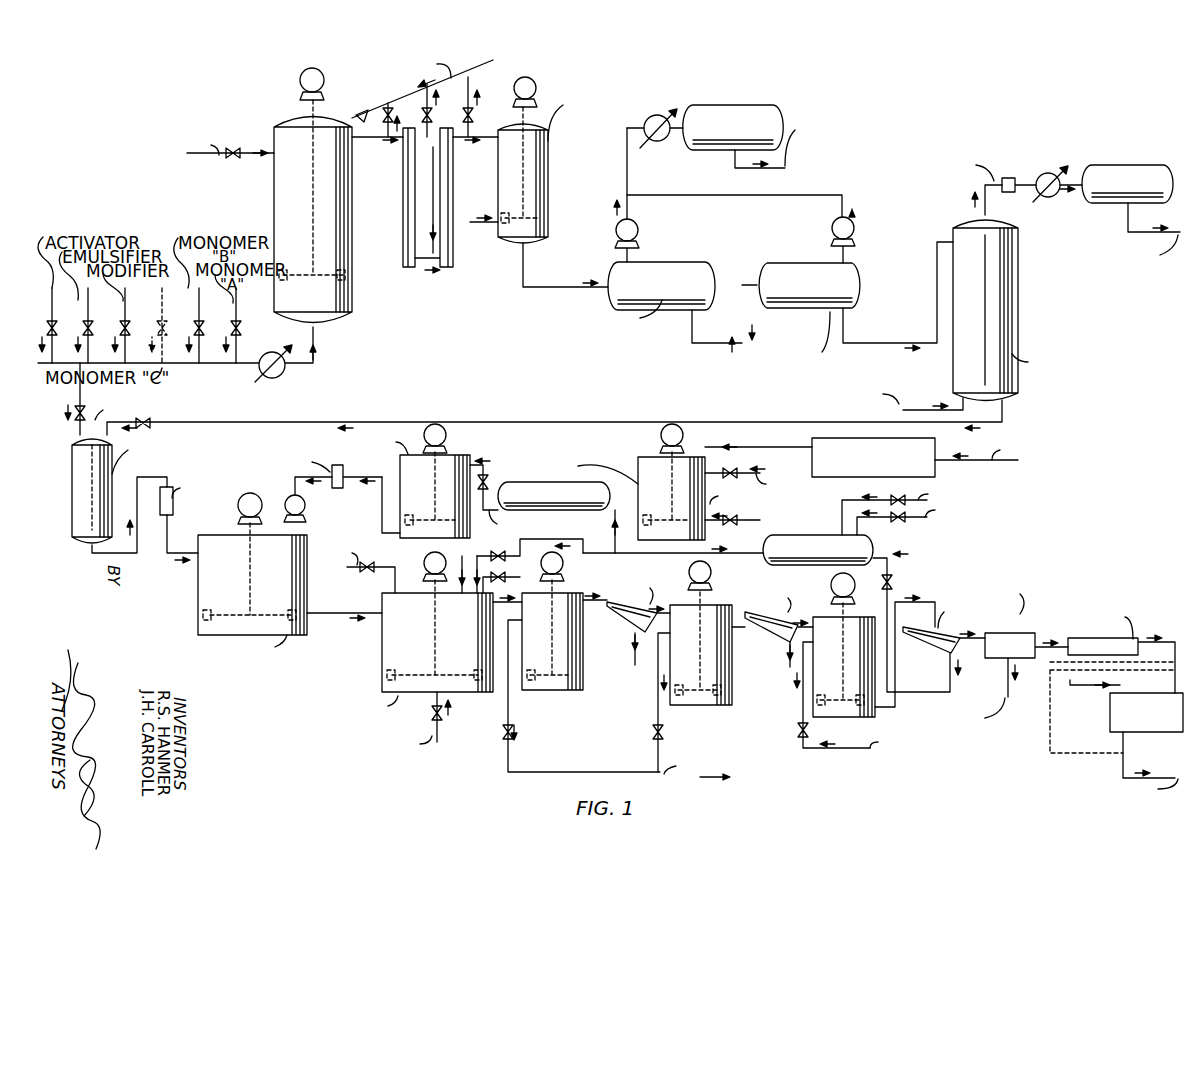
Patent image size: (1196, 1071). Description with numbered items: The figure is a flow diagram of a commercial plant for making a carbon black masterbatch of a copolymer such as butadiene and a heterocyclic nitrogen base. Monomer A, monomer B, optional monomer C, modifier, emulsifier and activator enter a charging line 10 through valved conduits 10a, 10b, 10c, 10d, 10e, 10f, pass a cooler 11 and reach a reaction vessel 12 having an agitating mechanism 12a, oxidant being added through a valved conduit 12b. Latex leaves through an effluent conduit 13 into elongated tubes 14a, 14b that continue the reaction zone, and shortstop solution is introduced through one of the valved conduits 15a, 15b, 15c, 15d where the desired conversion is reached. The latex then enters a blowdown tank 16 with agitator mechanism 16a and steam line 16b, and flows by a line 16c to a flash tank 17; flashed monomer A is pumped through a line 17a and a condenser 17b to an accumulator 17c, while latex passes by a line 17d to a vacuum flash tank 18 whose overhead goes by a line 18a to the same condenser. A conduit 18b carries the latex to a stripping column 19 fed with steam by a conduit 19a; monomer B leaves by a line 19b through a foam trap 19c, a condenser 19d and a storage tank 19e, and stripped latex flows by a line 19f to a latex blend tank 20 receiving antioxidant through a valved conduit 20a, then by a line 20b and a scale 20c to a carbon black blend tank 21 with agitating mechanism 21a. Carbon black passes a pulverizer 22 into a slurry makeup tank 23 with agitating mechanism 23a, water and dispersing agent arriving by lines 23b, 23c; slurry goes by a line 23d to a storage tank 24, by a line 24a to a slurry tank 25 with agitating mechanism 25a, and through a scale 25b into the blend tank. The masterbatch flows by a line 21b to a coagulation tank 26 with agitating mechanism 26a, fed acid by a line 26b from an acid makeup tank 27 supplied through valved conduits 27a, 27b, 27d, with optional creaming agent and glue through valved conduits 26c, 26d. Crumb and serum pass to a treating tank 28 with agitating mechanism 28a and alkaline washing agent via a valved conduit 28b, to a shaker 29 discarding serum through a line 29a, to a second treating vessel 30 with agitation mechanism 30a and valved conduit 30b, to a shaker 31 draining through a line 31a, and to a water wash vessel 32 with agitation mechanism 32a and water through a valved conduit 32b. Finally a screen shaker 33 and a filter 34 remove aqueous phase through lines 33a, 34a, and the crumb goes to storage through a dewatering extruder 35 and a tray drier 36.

The charging line 10 is at (216, 364).
The valved conduit 10a is at (249, 315).
The valved conduit 10b is at (212, 315).
The valved conduit 10c is at (174, 315).
The valved conduit 10d is at (138, 315).
The valved conduit 10e is at (100, 315).
The valved conduit 10f is at (63, 315).
The cooler 11 is at (272, 350).
The reaction vessel 12 is at (344, 232).
The agitating mechanism 12a is at (300, 74).
The valved conduit 12b is at (201, 155).
The effluent conduit 13 is at (354, 138).
The elongated tube 14a is at (402, 190).
The elongated tube 14b is at (446, 172).
The valved conduit 15a is at (362, 109).
The valved conduit 15b is at (394, 92).
The valved conduit 15c is at (426, 88).
The valved conduit 15d is at (473, 80).
The blowdown tank 16 is at (544, 168).
The agitator mechanism 16a is at (520, 75).
The steam line 16b is at (478, 224).
The transfer line 16c is at (539, 287).
The flash tank 17 is at (691, 308).
The overhead line 17a is at (628, 199).
The condenser 17b is at (648, 112).
The accumulator 17c is at (704, 114).
The latex line 17d is at (690, 336).
The vacuum flash tank 18 is at (825, 262).
The overhead line 18a is at (738, 197).
The conduit 18b is at (882, 343).
The stripping column 19 is at (959, 370).
The steam conduit 19a is at (947, 396).
The overhead line 19b is at (987, 186).
The foam trap 19c is at (1009, 178).
The condenser 19d is at (1049, 175).
The storage tank 19e is at (1135, 172).
The latex line 19f is at (1010, 408).
The latex blend tank 20 is at (72, 497).
The valved conduit 20a is at (87, 400).
The line 20b is at (80, 559).
The scale 20c is at (178, 508).
The carbon black blend tank 21 is at (198, 584).
The agitating mechanism 21a is at (293, 494).
The line 21b is at (350, 610).
The pulverizer 22 is at (938, 470).
The slurry makeup tank 23 is at (638, 468).
The agitating mechanism 23a is at (682, 434).
The water line 23b is at (754, 473).
The dispersing agent line 23c is at (756, 520).
The slurry line 23d is at (614, 545).
The storage tank 24 is at (581, 482).
The line 24a is at (494, 485).
The slurry tank 25 is at (380, 536).
The agitating mechanism 25a is at (444, 435).
The scale 25b is at (344, 464).
The coagulation tank 26 is at (381, 666).
The agitating mechanism 26a is at (428, 567).
The acid line 26b is at (625, 555).
The valved conduit 26c is at (484, 557).
The valved conduit 26d is at (349, 566).
The acid makeup tank 27 is at (765, 545).
The valved conduit 27a is at (920, 494).
The valved conduit 27b is at (934, 514).
The valved conduit 27d is at (893, 560).
The treating tank 28 is at (552, 692).
The agitating mechanism 28a is at (572, 559).
The valved conduit 28b is at (494, 711).
The shaker 29 is at (620, 614).
The line 29a is at (634, 656).
The second treating vessel 30 is at (732, 684).
The agitation mechanism 30a is at (710, 562).
The valved conduit 30b is at (656, 692).
The shaker 31 is at (751, 618).
The line 31a is at (790, 668).
The water wash vessel 32 is at (875, 712).
The agitation mechanism 32a is at (830, 582).
The valved conduit 32b is at (801, 737).
The screen shaker 33 is at (926, 640).
The line 33a is at (940, 684).
The filter 34 is at (1023, 658).
The line 34a is at (1003, 678).
The dewatering extruder 35 is at (1139, 638).
The tray drier 36 is at (1104, 719).